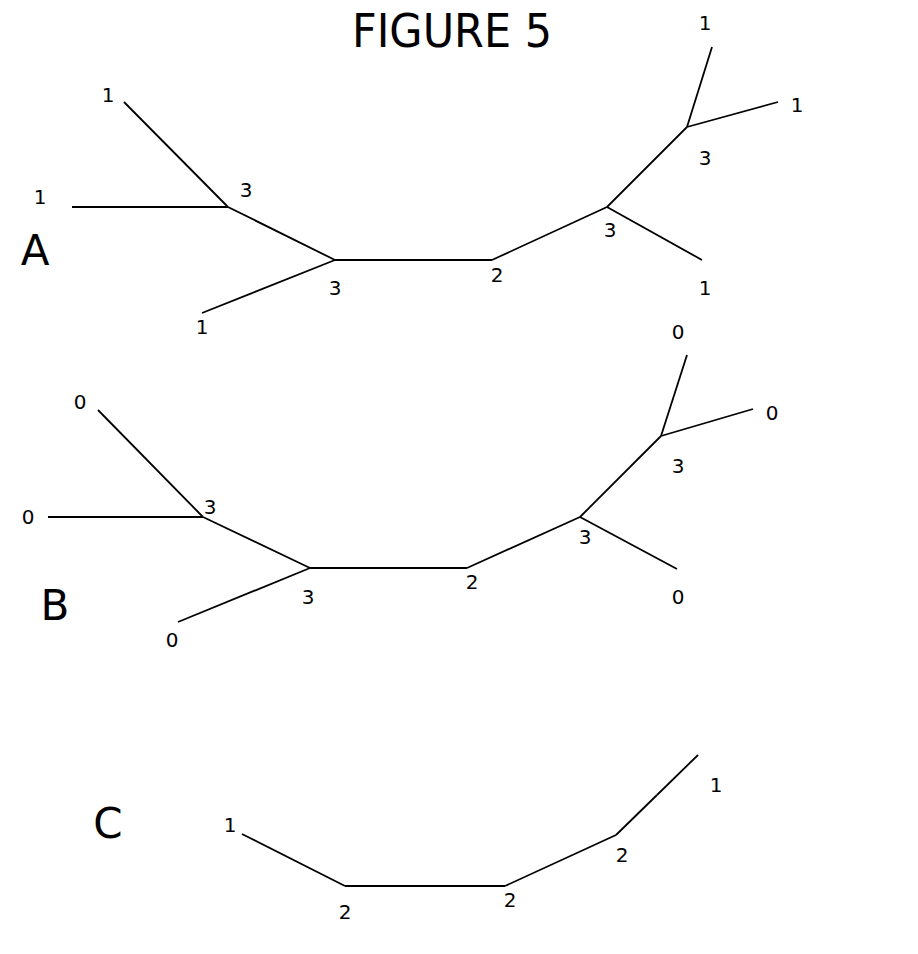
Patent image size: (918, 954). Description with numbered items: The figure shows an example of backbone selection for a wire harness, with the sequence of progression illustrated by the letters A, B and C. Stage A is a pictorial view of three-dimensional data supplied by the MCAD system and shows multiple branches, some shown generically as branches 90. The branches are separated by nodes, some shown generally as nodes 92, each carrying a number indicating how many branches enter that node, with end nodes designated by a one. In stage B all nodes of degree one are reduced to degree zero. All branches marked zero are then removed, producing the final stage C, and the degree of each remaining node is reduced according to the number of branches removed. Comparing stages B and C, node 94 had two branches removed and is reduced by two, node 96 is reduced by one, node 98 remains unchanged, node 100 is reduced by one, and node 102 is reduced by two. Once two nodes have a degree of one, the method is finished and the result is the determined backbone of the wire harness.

The branches 90 is at (156, 130).
The nodes 92 is at (488, 258).
The node 94 is at (659, 434).
The node 96 is at (579, 514).
The node 98 is at (465, 566).
The node 100 is at (312, 566).
The node 102 is at (199, 518).